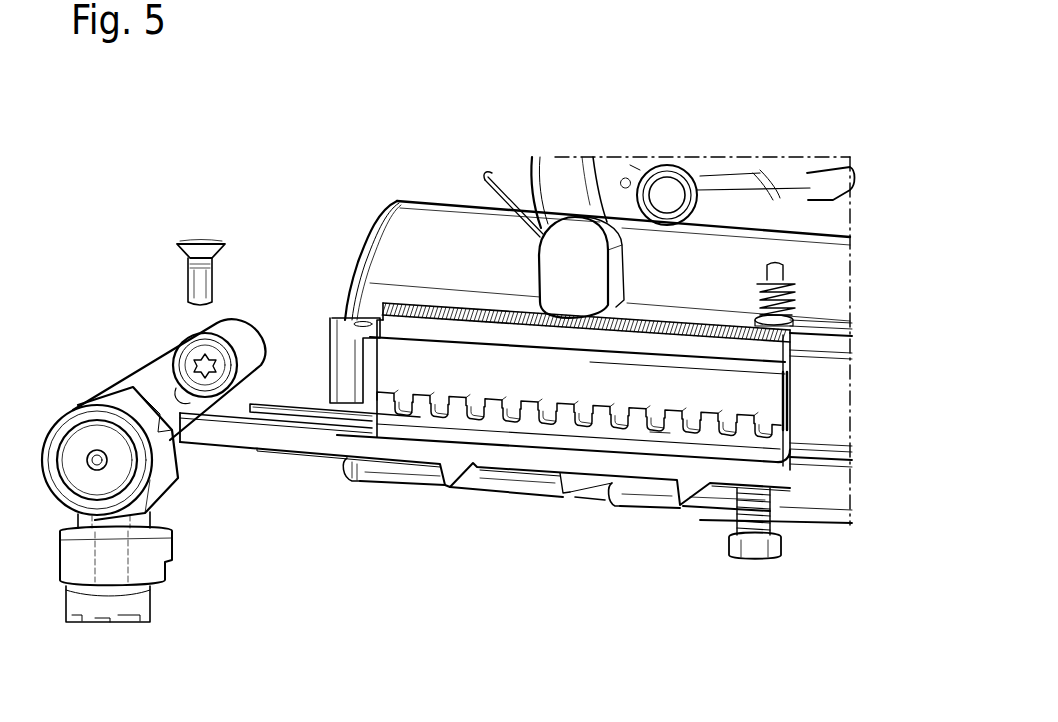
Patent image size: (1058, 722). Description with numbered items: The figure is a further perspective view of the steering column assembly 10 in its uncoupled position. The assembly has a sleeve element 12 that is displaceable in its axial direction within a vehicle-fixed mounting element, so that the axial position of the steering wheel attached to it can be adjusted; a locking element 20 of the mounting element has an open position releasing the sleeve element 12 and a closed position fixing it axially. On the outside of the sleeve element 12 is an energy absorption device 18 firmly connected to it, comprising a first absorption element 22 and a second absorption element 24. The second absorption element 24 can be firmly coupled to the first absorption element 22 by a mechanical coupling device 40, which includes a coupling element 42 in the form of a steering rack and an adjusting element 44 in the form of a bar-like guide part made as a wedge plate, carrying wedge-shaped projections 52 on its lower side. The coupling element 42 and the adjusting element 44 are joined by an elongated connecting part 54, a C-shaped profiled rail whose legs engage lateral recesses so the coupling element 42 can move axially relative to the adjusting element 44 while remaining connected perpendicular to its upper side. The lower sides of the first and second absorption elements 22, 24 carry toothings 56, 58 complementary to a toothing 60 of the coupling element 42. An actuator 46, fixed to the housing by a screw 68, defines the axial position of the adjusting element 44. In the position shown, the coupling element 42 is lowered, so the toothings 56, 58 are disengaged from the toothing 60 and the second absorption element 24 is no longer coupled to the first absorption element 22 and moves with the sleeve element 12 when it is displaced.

The steering column assembly 10 is at (186, 168).
The sleeve element 12 is at (822, 278).
The energy absorption device 18 is at (791, 478).
The locking element 20 is at (556, 179).
The first absorption element 22 is at (830, 376).
The second absorption element 24 is at (712, 419).
The coupling device 40 is at (552, 514).
The coupling element 42 is at (492, 427).
The adjusting element 44 is at (337, 456).
The actuator 46 is at (83, 440).
The wedge-shaped projections 52 is at (441, 486).
The connecting part 54 is at (278, 414).
The toothing 56 is at (865, 434).
The toothing 58 is at (770, 392).
The toothing 60 is at (660, 429).
The screw 68 is at (192, 348).